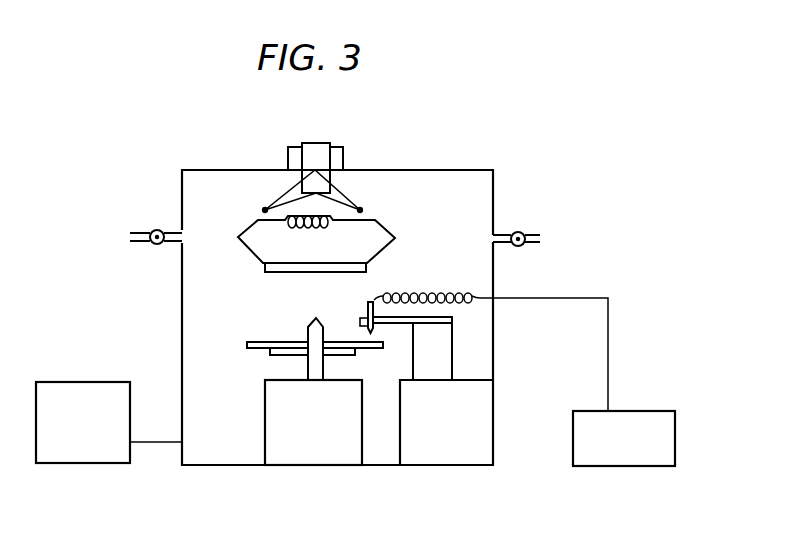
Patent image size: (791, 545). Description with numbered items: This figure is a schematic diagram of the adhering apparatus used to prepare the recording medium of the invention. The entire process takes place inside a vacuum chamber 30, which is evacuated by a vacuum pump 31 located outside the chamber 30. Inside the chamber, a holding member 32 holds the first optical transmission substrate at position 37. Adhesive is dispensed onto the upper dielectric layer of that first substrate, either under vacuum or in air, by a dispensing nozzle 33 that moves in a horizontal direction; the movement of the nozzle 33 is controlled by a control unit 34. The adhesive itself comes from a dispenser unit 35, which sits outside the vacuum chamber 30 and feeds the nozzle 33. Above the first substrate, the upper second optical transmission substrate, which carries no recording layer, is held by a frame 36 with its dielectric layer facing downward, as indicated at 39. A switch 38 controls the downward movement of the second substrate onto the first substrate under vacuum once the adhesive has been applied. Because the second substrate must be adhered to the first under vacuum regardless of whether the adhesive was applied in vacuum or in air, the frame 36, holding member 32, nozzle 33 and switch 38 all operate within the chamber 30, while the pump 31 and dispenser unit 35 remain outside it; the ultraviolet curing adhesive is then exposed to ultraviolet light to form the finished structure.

The vacuum chamber 30 is at (475, 200).
The vacuum pump 31 is at (88, 455).
The holding member 32 is at (312, 457).
The dispensing nozzle 33 is at (366, 304).
The control unit 34 is at (445, 352).
The dispenser unit 35 is at (657, 398).
The frame 36 is at (363, 209).
The position of first substrate 37 is at (383, 343).
The switch 38 is at (322, 142).
The downward-facing dielectric layer position 39 is at (377, 262).